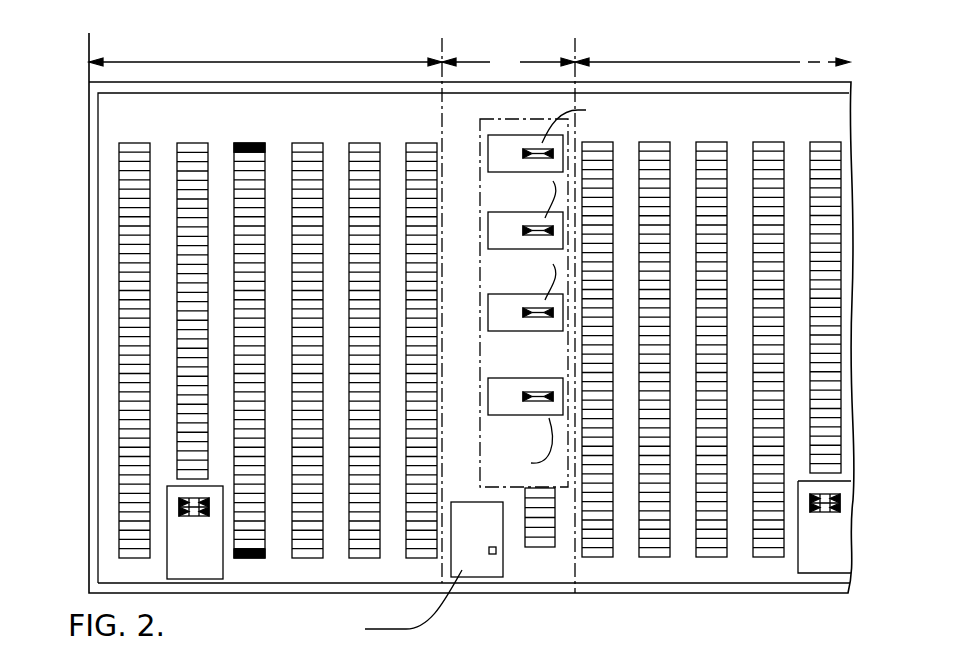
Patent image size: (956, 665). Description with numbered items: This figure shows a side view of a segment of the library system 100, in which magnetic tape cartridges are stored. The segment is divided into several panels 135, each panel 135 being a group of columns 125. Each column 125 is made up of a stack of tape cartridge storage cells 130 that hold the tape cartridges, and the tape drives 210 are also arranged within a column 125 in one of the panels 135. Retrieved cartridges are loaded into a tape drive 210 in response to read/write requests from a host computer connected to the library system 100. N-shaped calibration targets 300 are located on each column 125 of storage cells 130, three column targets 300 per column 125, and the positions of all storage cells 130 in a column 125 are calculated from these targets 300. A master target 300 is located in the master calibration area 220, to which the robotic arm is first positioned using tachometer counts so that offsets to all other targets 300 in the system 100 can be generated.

The library system 100 is at (163, 41).
The panels 135 is at (413, 50).
The columns 125 is at (135, 136).
The tape cartridge storage cells 130 is at (119, 160).
The calibration targets 300 is at (119, 456).
The tape transport mechanism (tape drive) 210 is at (488, 385).
The master calibration area 220 is at (474, 569).